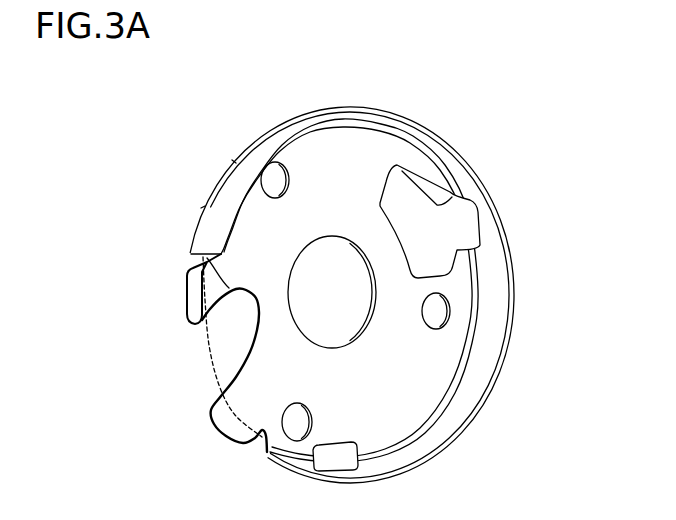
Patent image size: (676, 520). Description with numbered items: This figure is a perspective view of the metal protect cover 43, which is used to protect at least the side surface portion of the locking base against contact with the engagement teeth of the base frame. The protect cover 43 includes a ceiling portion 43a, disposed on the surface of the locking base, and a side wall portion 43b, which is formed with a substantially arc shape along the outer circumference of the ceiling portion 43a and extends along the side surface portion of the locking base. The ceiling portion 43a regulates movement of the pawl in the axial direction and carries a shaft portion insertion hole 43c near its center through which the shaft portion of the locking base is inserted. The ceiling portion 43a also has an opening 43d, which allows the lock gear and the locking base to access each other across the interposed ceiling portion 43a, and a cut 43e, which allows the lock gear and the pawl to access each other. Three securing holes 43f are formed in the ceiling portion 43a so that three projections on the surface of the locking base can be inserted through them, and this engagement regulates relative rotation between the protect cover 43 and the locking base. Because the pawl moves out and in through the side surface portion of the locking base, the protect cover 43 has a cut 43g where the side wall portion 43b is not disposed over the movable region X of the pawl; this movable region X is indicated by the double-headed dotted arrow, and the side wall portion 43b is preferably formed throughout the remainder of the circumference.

The protect cover 43 is at (349, 295).
The ceiling portion 43a is at (381, 382).
The side wall portion 43b is at (516, 314).
The shaft portion insertion hole 43c is at (290, 292).
The opening 43d is at (378, 209).
The cut 43e is at (259, 302).
The securing holes 43f is at (289, 179).
The cut 43g is at (187, 284).
The movable region X is at (207, 352).